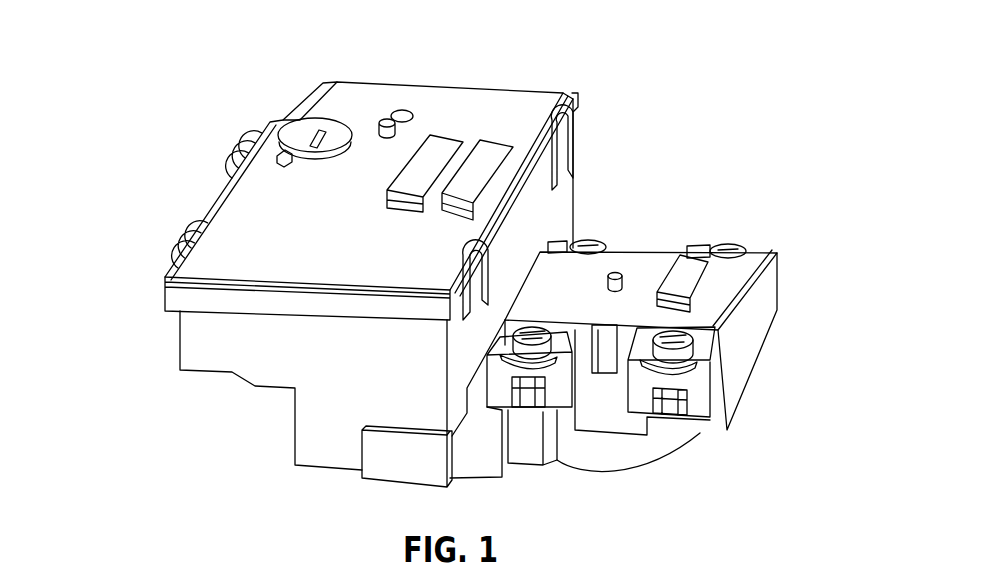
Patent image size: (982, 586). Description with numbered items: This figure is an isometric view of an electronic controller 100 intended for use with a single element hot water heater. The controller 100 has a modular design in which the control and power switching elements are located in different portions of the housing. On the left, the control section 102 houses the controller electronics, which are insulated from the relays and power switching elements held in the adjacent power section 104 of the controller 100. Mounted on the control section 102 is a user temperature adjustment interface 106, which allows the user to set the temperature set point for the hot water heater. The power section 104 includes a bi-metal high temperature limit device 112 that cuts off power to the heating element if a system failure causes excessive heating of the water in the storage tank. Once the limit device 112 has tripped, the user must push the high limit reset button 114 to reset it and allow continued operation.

The electronic controller 100 is at (185, 62).
The control section 102 is at (305, 433).
The power section 104 is at (755, 383).
The user temperature adjustment interface 106 is at (340, 110).
The bi-metal high temperature limit device 112 is at (693, 228).
The high limit reset button 114 is at (622, 262).